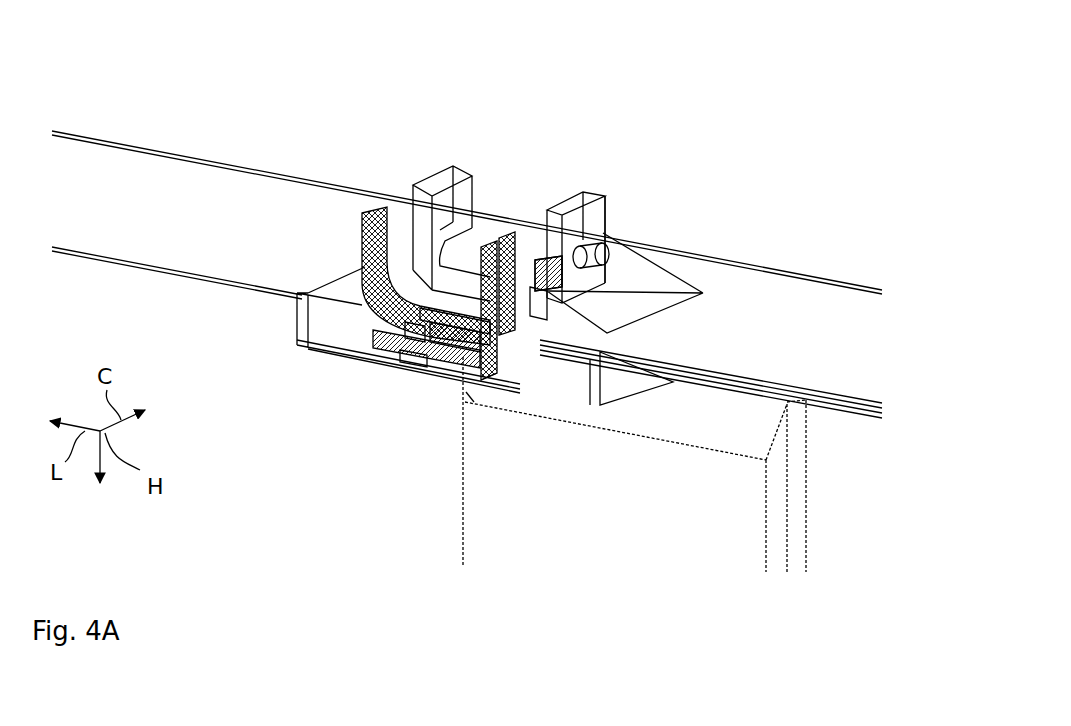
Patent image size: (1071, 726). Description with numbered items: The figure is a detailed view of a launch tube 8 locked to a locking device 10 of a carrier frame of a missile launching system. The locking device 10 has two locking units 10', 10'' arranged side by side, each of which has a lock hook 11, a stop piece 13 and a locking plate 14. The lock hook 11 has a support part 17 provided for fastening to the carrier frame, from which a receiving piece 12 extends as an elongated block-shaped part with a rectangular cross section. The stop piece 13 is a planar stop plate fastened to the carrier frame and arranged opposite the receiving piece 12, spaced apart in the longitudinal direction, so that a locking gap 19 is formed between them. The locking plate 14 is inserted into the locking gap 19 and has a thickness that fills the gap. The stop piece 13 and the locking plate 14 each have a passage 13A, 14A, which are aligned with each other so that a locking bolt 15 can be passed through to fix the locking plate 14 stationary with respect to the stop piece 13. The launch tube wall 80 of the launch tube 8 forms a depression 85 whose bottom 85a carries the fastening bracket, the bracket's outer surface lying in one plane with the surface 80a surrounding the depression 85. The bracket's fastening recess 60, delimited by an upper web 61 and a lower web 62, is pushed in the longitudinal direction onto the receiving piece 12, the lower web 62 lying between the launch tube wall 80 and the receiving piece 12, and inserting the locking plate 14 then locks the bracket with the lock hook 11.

The locking device 10 is at (472, 100).
The locking unit 10' is at (373, 350).
The locking unit 10'' is at (685, 213).
The launch tube 8 is at (787, 266).
The launch tube wall 80 is at (112, 157).
The surface of the launch tube wall 80a is at (158, 184).
The depression 85 is at (323, 287).
The bottom of the depression 85a is at (557, 359).
The support part 17 is at (376, 200).
The passage of the locking plate 14A is at (485, 245).
The passage of the stop piece 13A is at (503, 272).
The stop piece 13 is at (588, 194).
The locking plate 14 is at (570, 319).
The locking bolt 15 is at (605, 257).
The lock hook 11 is at (384, 357).
The receiving piece 12 is at (448, 357).
The locking gap 19 is at (485, 366).
The fastening recess 60 is at (426, 364).
The upper web 61 is at (403, 356).
The lower web 62 is at (462, 357).